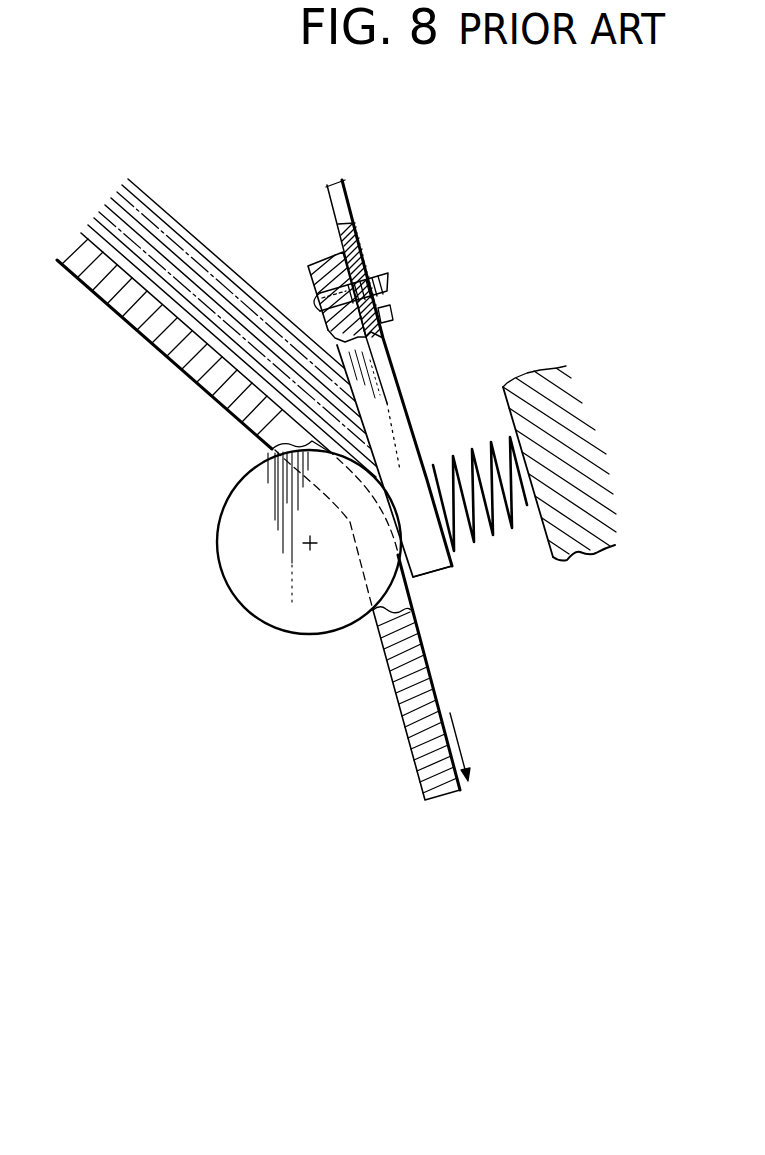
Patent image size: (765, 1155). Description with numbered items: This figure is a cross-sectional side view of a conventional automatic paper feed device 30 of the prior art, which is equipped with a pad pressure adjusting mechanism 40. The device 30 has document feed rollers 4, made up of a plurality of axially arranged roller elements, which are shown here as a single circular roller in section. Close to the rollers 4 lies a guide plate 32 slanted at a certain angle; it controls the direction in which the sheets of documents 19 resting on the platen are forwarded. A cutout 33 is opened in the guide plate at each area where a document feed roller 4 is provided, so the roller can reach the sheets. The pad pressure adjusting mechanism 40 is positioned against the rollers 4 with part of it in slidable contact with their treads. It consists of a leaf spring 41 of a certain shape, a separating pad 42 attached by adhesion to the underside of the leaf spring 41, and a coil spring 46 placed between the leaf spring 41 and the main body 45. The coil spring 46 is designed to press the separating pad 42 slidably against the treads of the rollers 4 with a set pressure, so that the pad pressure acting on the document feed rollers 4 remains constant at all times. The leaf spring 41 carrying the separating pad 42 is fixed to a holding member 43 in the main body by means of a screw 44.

The document feed rollers 4 is at (222, 568).
The sheets of documents 19 is at (146, 200).
The automatic paper feed device 30 is at (281, 139).
The guide plate 32 is at (103, 298).
The cutout 33 is at (420, 614).
The pad pressure adjusting mechanism 40 is at (463, 356).
The leaf spring 41 is at (398, 382).
The separating pad 42 is at (437, 576).
The holding member 43 is at (350, 207).
The screw 44 is at (314, 297).
The main body 45 is at (582, 537).
The coil spring 46 is at (498, 510).